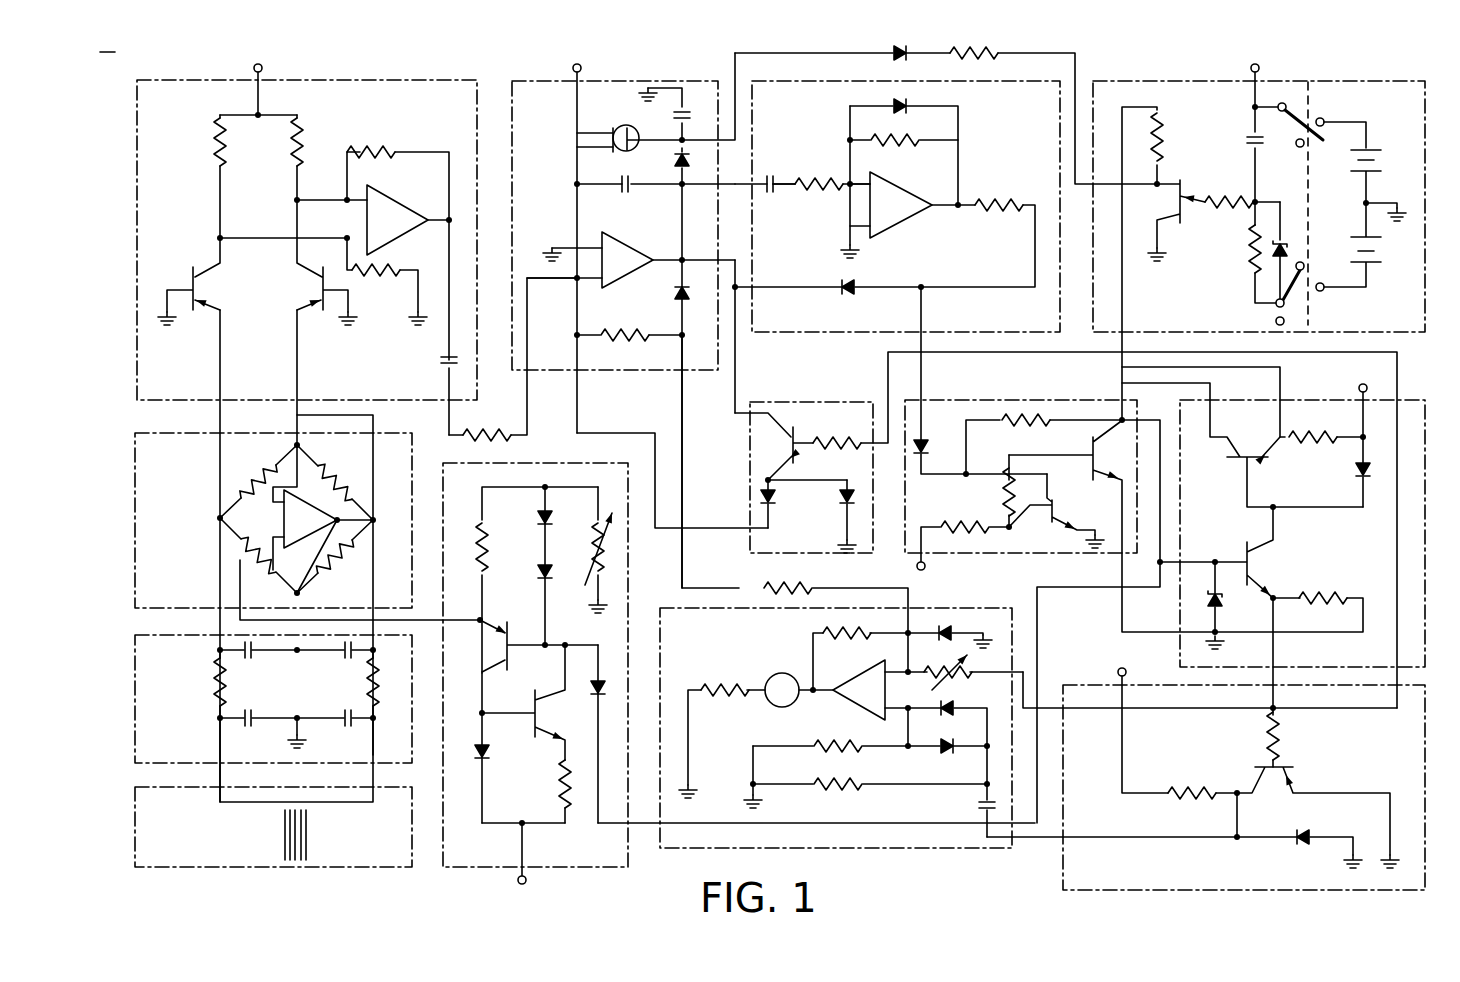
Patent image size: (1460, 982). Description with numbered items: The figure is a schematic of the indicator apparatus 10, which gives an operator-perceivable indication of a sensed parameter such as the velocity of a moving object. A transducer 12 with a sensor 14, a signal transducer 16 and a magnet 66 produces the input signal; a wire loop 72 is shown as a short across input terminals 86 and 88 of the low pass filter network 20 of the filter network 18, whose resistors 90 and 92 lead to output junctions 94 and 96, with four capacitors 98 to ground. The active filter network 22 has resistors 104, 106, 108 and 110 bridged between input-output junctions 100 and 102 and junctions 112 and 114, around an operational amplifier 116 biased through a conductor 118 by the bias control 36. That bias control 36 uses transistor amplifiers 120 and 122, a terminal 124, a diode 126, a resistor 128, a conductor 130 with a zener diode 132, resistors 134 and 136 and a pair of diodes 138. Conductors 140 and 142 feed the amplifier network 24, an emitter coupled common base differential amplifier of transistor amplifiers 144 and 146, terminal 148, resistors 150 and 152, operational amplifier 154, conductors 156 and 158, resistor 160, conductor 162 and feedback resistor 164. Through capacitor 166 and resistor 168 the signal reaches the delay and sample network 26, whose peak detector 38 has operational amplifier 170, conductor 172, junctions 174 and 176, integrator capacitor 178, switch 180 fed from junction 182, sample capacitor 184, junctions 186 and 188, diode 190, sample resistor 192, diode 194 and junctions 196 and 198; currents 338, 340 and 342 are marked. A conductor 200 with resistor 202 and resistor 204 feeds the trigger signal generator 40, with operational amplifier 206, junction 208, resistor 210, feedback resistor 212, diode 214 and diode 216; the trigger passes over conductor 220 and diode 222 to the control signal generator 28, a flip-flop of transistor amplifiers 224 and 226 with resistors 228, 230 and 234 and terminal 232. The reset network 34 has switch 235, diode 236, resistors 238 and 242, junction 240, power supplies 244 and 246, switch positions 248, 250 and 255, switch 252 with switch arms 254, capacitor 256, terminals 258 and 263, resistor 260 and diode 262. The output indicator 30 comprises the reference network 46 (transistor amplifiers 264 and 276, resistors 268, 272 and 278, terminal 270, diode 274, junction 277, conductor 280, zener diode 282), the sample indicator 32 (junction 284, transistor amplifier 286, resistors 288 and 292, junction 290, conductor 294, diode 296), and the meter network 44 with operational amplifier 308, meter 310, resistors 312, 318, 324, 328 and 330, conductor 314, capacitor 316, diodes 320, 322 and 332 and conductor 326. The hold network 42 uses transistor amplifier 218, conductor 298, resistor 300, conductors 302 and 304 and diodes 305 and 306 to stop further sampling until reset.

The indicator apparatus 10 is at (185, 62).
The transducer 12 is at (123, 818).
The sensor 14 is at (280, 815).
The signal transducer 16 is at (395, 800).
The filter network 18 is at (113, 595).
The low pass filter network 20 is at (122, 688).
The active filter network 22 is at (120, 496).
The amplifier network 24 is at (120, 292).
The delay and sample network 26 is at (726, 64).
The control signal generator 28 is at (1005, 400).
The output indicator 30 is at (660, 603).
The sample indicator 32 is at (1185, 885).
The reset network 34 is at (1417, 68).
The bias control 36 is at (618, 878).
The peak detector 38 is at (530, 75).
The trigger signal generator 40 is at (1033, 70).
The hold network 42 is at (795, 392).
The meter network 44 is at (983, 853).
The reference network 46 is at (1405, 396).
The magnet 66 is at (307, 848).
The wire loop 72 is at (218, 805).
The input terminal 86 is at (216, 720).
The input terminal 88 is at (378, 722).
The resistor 90 is at (212, 686).
The resistor 92 is at (378, 682).
The output junction 94 is at (216, 652).
The output junction 96 is at (375, 650).
The capacitor 98 is at (345, 675).
The input-output junction 100 is at (217, 520).
The input-output junction 102 is at (378, 520).
The resistor 104 is at (256, 474).
The resistor 106 is at (344, 474).
The resistor 108 is at (245, 550).
The resistor 110 is at (345, 570).
The junction 112 is at (296, 442).
The junction 114 is at (295, 593).
The operational amplifier 116 is at (340, 515).
The conductor 118 is at (470, 620).
The transistor amplifier 120 is at (517, 625).
The transistor amplifier 122 is at (535, 732).
The terminal 124 is at (527, 883).
The diode 126 is at (488, 774).
The resistor 128 is at (562, 793).
The conductor 130 is at (590, 828).
The diode 132 is at (596, 699).
The resistor 134 is at (484, 543).
The variable resistor 136 is at (598, 577).
The diode 138 is at (538, 578).
The conductor 140 is at (218, 414).
The conductor 142 is at (301, 385).
The transistor amplifier 144 is at (212, 298).
The transistor amplifier 146 is at (315, 291).
The terminal 148 is at (262, 68).
The resistor 150 is at (216, 150).
The resistor 152 is at (300, 147).
The operational amplifier 154 is at (373, 192).
The conductor 156 is at (226, 240).
The conductor 158 is at (340, 196).
The resistor 160 is at (364, 275).
The conductor 162 is at (449, 252).
The feedback resistor 164 is at (385, 149).
The capacitor 166 is at (445, 364).
The resistor 168 is at (480, 435).
The operational amplifier 170 is at (637, 253).
The conductor 172 is at (578, 292).
The junction 174 is at (567, 283).
The junction 176 is at (687, 258).
The integrator capacitor 178 is at (620, 190).
The switch 180 is at (622, 125).
The junction 182 is at (586, 61).
The sample capacitor 184 is at (684, 108).
The junction 186 is at (678, 135).
The junction 188 is at (690, 182).
The diode 190 is at (674, 163).
The sample resistor 192 is at (622, 340).
The diode 194 is at (673, 298).
The junction 196 is at (572, 338).
The junction 198 is at (686, 340).
The conductor 200 is at (772, 187).
The resistor 202 is at (783, 188).
The resistor 204 is at (818, 193).
The operational amplifier 206 is at (904, 224).
The junction 208 is at (926, 285).
The resistor 210 is at (995, 196).
The feedback resistor 212 is at (900, 142).
The diode 214 is at (907, 110).
The diode 216 is at (856, 283).
The transistor amplifier 218 is at (800, 456).
The conductor 220 is at (924, 314).
The diode 222 is at (928, 448).
The transistor amplifier 224 is at (1066, 516).
The transistor amplifier 226 is at (1090, 446).
The resistor 228 is at (1015, 432).
The resistor 230 is at (1006, 495).
The terminal 232 is at (925, 572).
The resistor 234 is at (963, 520).
The switch 235 is at (1200, 202).
The diode 236 is at (893, 57).
The resistor 238 is at (982, 65).
The junction 240 is at (1255, 202).
The resistor 242 is at (1242, 185).
The power supply 244 is at (1370, 155).
The power supply 246 is at (1385, 250).
The switch position 248 is at (1324, 120).
The switch position 250 is at (1324, 290).
The switch 252 is at (1293, 95).
The switch arm 254 is at (1325, 142).
The off switch position 255 is at (1303, 147).
The capacitor 256 is at (1247, 130).
The terminal 258 is at (1251, 68).
The resistor 260 is at (1250, 266).
The diode 262 is at (1288, 247).
The terminal 263 is at (1276, 321).
The transistor amplifier 264 is at (1230, 460).
The resistor 268 is at (1160, 132).
The terminal 270 is at (1363, 384).
The resistor 272 is at (1330, 418).
The diode 274 is at (1355, 468).
The transistor amplifier 276 is at (1266, 562).
The junction 277 is at (1223, 642).
The resistor 278 is at (1310, 597).
The conductor 280 is at (1310, 635).
The diode 282 is at (1223, 605).
The junction 284 is at (1278, 708).
The transistor amplifier 286 is at (1295, 772).
The resistor 288 is at (1267, 725).
The junction 290 is at (1118, 672).
The resistor 292 is at (1180, 787).
The conductor 294 is at (1243, 812).
The diode 296 is at (1313, 832).
The conductor 298 is at (1397, 548).
The resistor 300 is at (853, 428).
The conductor 302 is at (738, 323).
The conductor 304 is at (658, 495).
The diode 305 is at (840, 509).
The diode 306 is at (776, 495).
The operational amplifier 308 is at (848, 712).
The meter 310 is at (790, 660).
The resistor 312 is at (740, 678).
The conductor 314 is at (1071, 842).
The capacitor 316 is at (980, 806).
The resistor 318 is at (837, 791).
The diode 320 is at (946, 752).
The diode 322 is at (956, 703).
The resistor 324 is at (840, 753).
The conductor 326 is at (1068, 712).
The variable resistor 328 is at (985, 658).
The feedback resistor 330 is at (847, 629).
The diode 332 is at (952, 628).
The current 338 is at (660, 195).
The current 340 is at (566, 168).
The current 342 is at (540, 272).